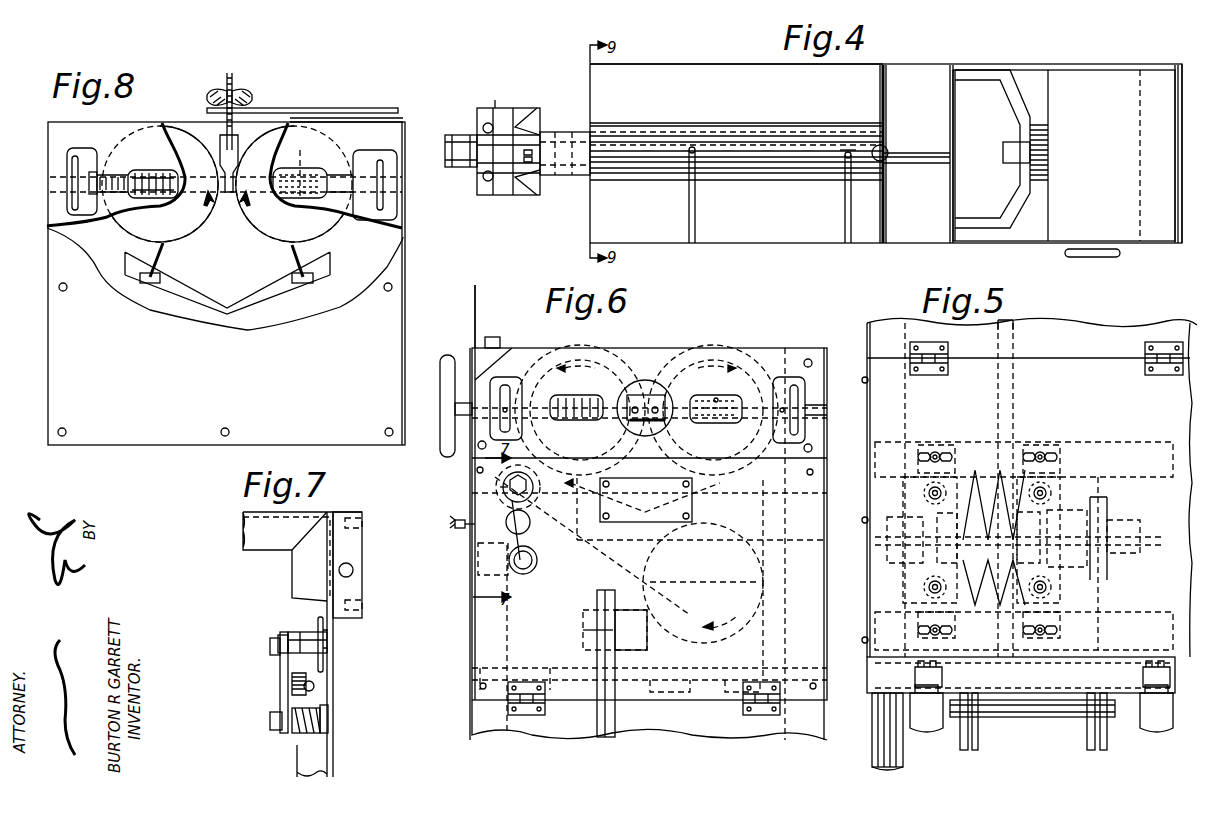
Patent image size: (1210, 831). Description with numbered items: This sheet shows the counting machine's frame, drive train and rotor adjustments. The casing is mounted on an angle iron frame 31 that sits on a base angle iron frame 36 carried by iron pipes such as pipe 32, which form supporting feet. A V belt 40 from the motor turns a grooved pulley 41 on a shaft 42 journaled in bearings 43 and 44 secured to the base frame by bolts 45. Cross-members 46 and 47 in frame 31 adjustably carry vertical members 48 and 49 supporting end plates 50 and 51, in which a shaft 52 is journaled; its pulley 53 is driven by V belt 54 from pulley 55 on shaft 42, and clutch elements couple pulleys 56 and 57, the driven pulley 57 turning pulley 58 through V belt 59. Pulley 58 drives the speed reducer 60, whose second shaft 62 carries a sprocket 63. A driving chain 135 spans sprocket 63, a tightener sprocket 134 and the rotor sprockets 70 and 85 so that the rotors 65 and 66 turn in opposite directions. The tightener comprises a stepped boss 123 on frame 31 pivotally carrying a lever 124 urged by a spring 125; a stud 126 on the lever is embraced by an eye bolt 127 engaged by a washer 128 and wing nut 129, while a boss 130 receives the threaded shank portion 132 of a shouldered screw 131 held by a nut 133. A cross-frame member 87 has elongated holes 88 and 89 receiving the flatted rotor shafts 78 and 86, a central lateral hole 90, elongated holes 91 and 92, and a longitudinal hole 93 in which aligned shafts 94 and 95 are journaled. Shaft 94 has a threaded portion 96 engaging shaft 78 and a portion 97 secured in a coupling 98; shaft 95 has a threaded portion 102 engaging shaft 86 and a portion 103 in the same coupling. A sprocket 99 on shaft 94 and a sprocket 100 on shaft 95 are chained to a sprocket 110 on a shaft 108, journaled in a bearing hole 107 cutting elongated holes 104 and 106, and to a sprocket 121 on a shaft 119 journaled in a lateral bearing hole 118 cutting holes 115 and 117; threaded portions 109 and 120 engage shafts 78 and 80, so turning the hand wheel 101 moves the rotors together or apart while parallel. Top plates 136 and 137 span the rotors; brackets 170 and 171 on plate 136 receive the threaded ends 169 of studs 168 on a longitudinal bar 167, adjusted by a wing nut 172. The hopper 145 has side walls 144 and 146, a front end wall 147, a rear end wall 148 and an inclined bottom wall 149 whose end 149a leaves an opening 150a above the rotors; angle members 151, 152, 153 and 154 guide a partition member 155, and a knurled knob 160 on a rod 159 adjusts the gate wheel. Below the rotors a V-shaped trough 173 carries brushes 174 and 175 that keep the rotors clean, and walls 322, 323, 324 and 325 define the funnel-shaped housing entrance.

In FIG. 6, the angle iron frame 31 is at (820, 503).
In FIG. 5, the angle iron frame 31 is at (902, 410).
In FIG. 7, the angle iron frame 31 is at (336, 748).
In FIG. 5, the iron pipe 32 is at (897, 767).
In FIG. 6, the base angle iron frame 36 is at (668, 691).
In FIG. 5, the base angle iron frame 36 is at (867, 693).
In FIG. 5, the V belt 40 is at (962, 750).
In FIG. 5, the grooved pulley 41 is at (978, 737).
In FIG. 5, the shaft 42 is at (1044, 714).
In FIG. 5, the bearing 43 is at (925, 730).
In FIG. 5, the bearing 44 is at (1155, 732).
In FIG. 5, the bolt 45 is at (943, 678).
In FIG. 5, the cross-member 46 is at (1118, 628).
In FIG. 5, the cross-member 47 is at (1096, 451).
In FIG. 5, the vertical member 48 is at (1056, 488).
In FIG. 5, the vertical member 49 is at (917, 470).
In FIG. 5, the end plate 50 is at (1053, 577).
In FIG. 5, the end plate 51 is at (910, 582).
In FIG. 5, the shaft 52 is at (1133, 526).
In FIG. 5, the grooved pulley 53 is at (1106, 515).
In FIG. 5, the V belt 54 is at (1101, 600).
In FIG. 5, the grooved pulley 55 is at (1105, 730).
In FIG. 5, the grooved pulley 56 is at (970, 495).
In FIG. 5, the grooved pulley 57 is at (1055, 512).
In FIG. 6, the grooved pulley 58 is at (600, 592).
In FIG. 6, the V belt 59 is at (608, 733).
In FIG. 5, the V belt 59 is at (1012, 408).
In FIG. 6, the speed reducer 60 is at (760, 650).
In FIG. 6, the second shaft 62 is at (714, 575).
In FIG. 6, the sprocket 63 is at (695, 636).
In FIG. 4, the rotor 65 is at (738, 170).
In FIG. 8, the rotor 65 is at (268, 237).
In FIG. 6, the rotor 65 is at (590, 346).
In FIG. 4, the rotor 66 is at (848, 126).
In FIG. 8, the rotor 66 is at (190, 232).
In FIG. 6, the rotor 66 is at (737, 358).
In FIG. 6, the sprocket 70 is at (638, 383).
In FIG. 8, the shaft 78 is at (296, 171).
In FIG. 6, the shaft 78 is at (570, 422).
In FIG. 8, the shaft 80 is at (162, 198).
In FIG. 6, the sprocket 85 is at (767, 358).
In FIG. 6, the shaft 86 is at (707, 423).
In FIG. 6, the cross-frame member 87 is at (663, 350).
In FIG. 6, the elongated hole 88 is at (562, 398).
In FIG. 6, the elongated hole 89 is at (698, 398).
In FIG. 6, the central lateral hole 90 is at (651, 393).
In FIG. 6, the elongated hole 91 is at (491, 368).
In FIG. 6, the elongated hole 92 is at (780, 378).
In FIG. 6, the longitudinal hole 93 is at (741, 435).
In FIG. 6, the shaft 94 is at (546, 390).
In FIG. 6, the shaft 95 is at (756, 390).
In FIG. 6, the threaded portion 96 is at (604, 408).
In FIG. 6, the portion 97 is at (615, 420).
In FIG. 6, the coupling 98 is at (651, 424).
In FIG. 6, the sprocket 99 is at (513, 388).
In FIG. 6, the sprocket 100 is at (798, 408).
In FIG. 4, the hand wheel 101 is at (1100, 256).
In FIG. 6, the hand wheel 101 is at (447, 358).
In FIG. 6, the threaded portion 102 is at (724, 425).
In FIG. 6, the portion 103 is at (694, 500).
In FIG. 8, the elongated hole 104 is at (313, 170).
In FIG. 8, the elongated hole 106 is at (377, 155).
In FIG. 8, the bearing hole 107 is at (397, 195).
In FIG. 8, the shaft 108 is at (338, 184).
In FIG. 8, the threaded portion 109 is at (285, 200).
In FIG. 8, the sprocket 110 is at (385, 168).
In FIG. 8, the elongated hole 115 is at (140, 174).
In FIG. 8, the elongated hole 117 is at (75, 216).
In FIG. 8, the lateral bearing hole 118 is at (115, 195).
In FIG. 8, the shaft 119 is at (111, 173).
In FIG. 8, the threaded portion 120 is at (133, 198).
In FIG. 8, the sprocket 121 is at (72, 166).
In FIG. 6, the stepped boss 123 is at (525, 574).
In FIG. 7, the stepped boss 123 is at (333, 713).
In FIG. 6, the lever 124 is at (525, 519).
In FIG. 7, the lever 124 is at (280, 695).
In FIG. 7, the spring 125 is at (293, 733).
In FIG. 6, the stud 126 is at (537, 560).
In FIG. 7, the stud 126 is at (315, 676).
In FIG. 6, the eye bolt 127 is at (530, 518).
In FIG. 7, the eye bolt 127 is at (292, 673).
In FIG. 6, the washer 128 is at (468, 530).
In FIG. 6, the wing nut 129 is at (447, 518).
In FIG. 7, the boss 130 is at (296, 634).
In FIG. 7, the shouldered screw 131 is at (325, 648).
In FIG. 6, the threaded shank portion 132 is at (508, 487).
In FIG. 7, the threaded shank portion 132 is at (280, 634).
In FIG. 6, the nut 133 is at (538, 490).
In FIG. 7, the nut 133 is at (270, 647).
In FIG. 6, the sprocket 134 is at (495, 492).
In FIG. 7, the sprocket 134 is at (330, 630).
In FIG. 6, the driving chain 135 is at (585, 568).
In FIG. 4, the top plate 136 is at (773, 243).
In FIG. 8, the top plate 136 is at (393, 118).
In FIG. 4, the second top plate 137 is at (687, 66).
In FIG. 4, the side wall 144 is at (1028, 65).
In FIG. 4, the hopper 145 is at (1052, 60).
In FIG. 4, the side wall 146 is at (1038, 243).
In FIG. 4, the front end wall 147 is at (882, 92).
In FIG. 4, the rear end wall 148 is at (1182, 235).
In FIG. 4, the inclined bottom wall 149 is at (1073, 155).
In FIG. 4, the end of wall 149a is at (1052, 92).
In FIG. 4, the opening 150a is at (1038, 155).
In FIG. 4, the angle member 151 is at (950, 65).
In FIG. 4, the angle member 152 is at (987, 69).
In FIG. 4, the angle member 153 is at (935, 257).
In FIG. 4, the angle member 154 is at (955, 243).
In FIG. 4, the partition member 155 is at (954, 120).
In FIG. 4, the rod 159 is at (910, 157).
In FIG. 4, the knurled knob 160 is at (887, 148).
In FIG. 8, the longitudinal bar 167 is at (238, 148).
In FIG. 8, the stud 168 is at (207, 116).
In FIG. 8, the threaded upper end 169 is at (235, 83).
In FIG. 4, the bracket member 170 is at (697, 222).
In FIG. 8, the bracket member 170 is at (301, 116).
In FIG. 4, the bracket member 171 is at (846, 210).
In FIG. 4, the wing nut 172 is at (690, 152).
In FIG. 8, the wing nut 172 is at (248, 95).
In FIG. 8, the V-shaped trough 173 is at (237, 304).
In FIG. 8, the longitudinal brush 174 is at (304, 281).
In FIG. 8, the longitudinal brush 175 is at (151, 283).
In FIG. 4, the wall 322 is at (535, 195).
In FIG. 4, the wall 323 is at (537, 118).
In FIG. 4, the depending wall 324 is at (501, 198).
In FIG. 4, the depending wall 325 is at (488, 127).